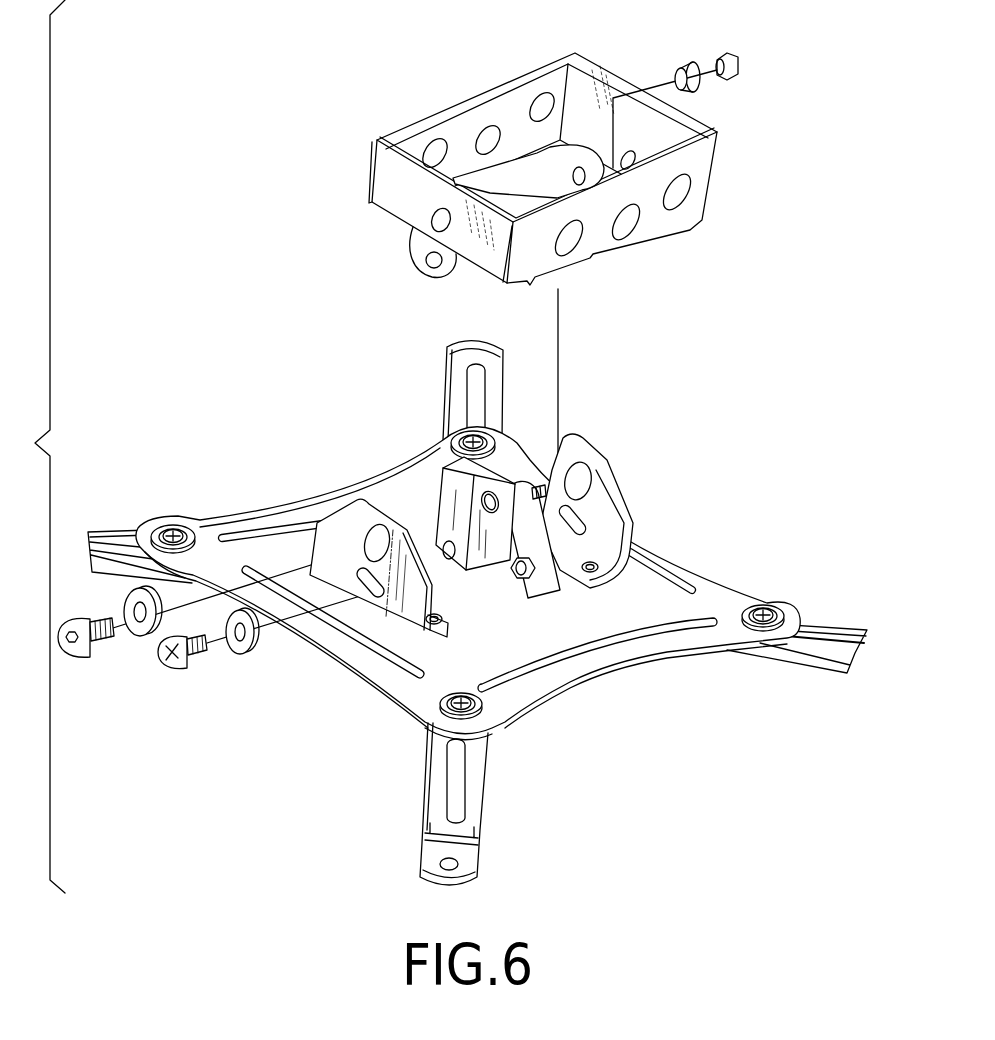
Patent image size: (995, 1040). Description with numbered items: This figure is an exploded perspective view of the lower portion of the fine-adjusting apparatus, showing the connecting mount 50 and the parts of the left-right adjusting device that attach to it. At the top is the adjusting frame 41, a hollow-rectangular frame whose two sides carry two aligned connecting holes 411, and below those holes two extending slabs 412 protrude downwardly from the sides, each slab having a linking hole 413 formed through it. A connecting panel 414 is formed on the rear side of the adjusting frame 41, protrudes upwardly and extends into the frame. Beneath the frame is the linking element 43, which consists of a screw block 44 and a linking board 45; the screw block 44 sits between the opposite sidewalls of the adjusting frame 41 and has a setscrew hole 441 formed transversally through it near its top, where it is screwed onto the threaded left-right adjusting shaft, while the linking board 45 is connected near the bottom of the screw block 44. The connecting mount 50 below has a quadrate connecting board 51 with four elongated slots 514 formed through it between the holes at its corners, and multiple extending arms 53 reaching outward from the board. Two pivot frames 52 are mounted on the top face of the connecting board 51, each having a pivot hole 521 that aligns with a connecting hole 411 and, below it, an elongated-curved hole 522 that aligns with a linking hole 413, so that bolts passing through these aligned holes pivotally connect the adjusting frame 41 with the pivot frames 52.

The adjusting frame 41 is at (537, 183).
The connecting hole 411 is at (440, 227).
The extending slab 412 is at (447, 276).
The linking hole 413 is at (428, 264).
The connecting panel 414 is at (542, 168).
The linking element 43 is at (508, 594).
The screw block 44 is at (447, 488).
The setscrew hole 441 is at (500, 497).
The linking board 45 is at (531, 595).
The connecting mount 50 is at (462, 587).
The connecting board 51 is at (477, 546).
The elongated slot 514 is at (607, 640).
The pivot frame 52 is at (505, 553).
The pivot hole 521 is at (590, 490).
The elongated-curved hole 522 is at (582, 530).
The extending arm 53 is at (477, 797).